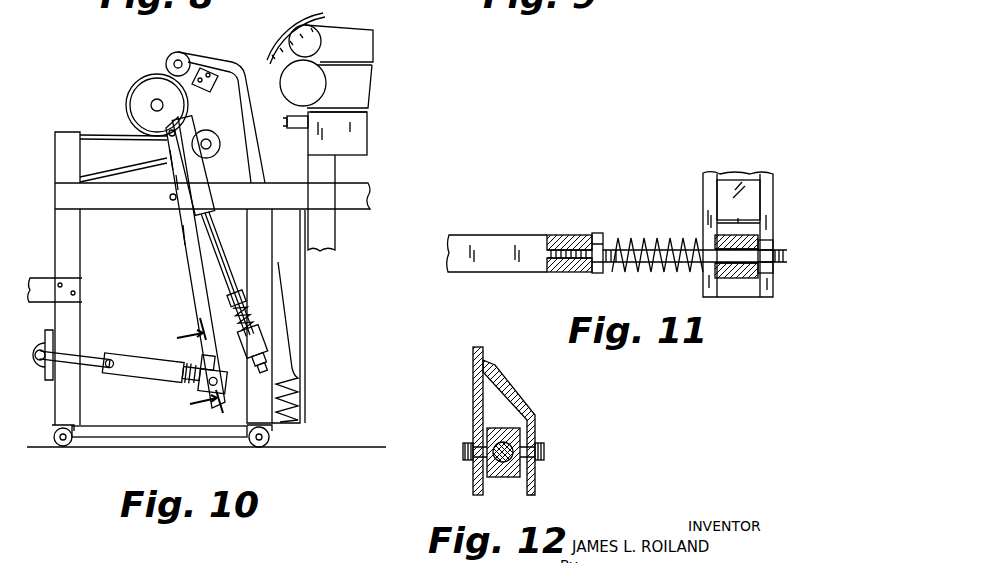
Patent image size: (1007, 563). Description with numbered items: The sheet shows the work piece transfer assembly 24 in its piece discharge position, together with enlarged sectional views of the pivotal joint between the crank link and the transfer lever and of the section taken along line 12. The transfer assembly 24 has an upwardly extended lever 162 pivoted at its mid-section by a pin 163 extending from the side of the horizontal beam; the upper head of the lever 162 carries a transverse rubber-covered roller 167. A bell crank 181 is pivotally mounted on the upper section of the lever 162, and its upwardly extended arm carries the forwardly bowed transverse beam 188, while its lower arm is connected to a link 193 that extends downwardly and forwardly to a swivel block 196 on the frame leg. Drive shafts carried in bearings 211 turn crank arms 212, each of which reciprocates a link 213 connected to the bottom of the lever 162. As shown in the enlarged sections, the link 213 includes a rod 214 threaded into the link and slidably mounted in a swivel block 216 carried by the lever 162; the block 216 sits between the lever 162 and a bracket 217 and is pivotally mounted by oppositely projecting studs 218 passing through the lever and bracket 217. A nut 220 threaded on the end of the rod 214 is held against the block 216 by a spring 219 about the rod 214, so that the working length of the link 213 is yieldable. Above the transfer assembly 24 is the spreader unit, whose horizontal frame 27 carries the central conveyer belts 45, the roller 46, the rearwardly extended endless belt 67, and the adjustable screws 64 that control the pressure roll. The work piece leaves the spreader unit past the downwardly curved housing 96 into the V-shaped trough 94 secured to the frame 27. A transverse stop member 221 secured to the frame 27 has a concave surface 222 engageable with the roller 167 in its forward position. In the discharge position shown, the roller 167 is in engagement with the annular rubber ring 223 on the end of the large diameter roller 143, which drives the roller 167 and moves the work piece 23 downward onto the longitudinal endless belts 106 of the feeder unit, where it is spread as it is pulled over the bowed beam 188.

In FIG. 10, the section line 12- 12 is at (194, 376).
In FIG. 10, the work piece 23 is at (260, 153).
In FIG. 10, the work piece transfer assembly 24 is at (234, 39).
In FIG. 10, the horizontal frame 27 is at (365, 145).
In FIG. 10, the central conveyer belts 45 is at (360, 67).
In FIG. 10, the roller 46 is at (315, 85).
In FIG. 10, the adjustable screws 64 is at (313, 43).
In FIG. 10, the endless belt 67 is at (365, 28).
In FIG. 10, the V-shaped trough 94 is at (305, 290).
In FIG. 10, the downwardly curved housing 96 is at (300, 15).
In FIG. 10, the endless belts 106 is at (105, 134).
In FIG. 10, the large diameter roller 143 is at (147, 77).
In FIG. 10, the lever 162 is at (173, 238).
In FIG. 11, the lever 162 is at (773, 183).
In FIG. 12, the lever 162 is at (472, 372).
In FIG. 10, the pin 163 is at (170, 199).
In FIG. 10, the roller 167 is at (177, 52).
In FIG. 10, the bell crank 181 is at (227, 76).
In FIG. 10, the transverse beam 188 is at (196, 93).
In FIG. 10, the link 193 is at (200, 176).
In FIG. 10, the swivel block 196 is at (280, 333).
In FIG. 10, the bearings 211 is at (36, 368).
In FIG. 10, the crank arm 212 is at (84, 350).
In FIG. 10, the link 213 is at (131, 350).
In FIG. 11, the link 213 is at (482, 235).
In FIG. 11, the rod 214 is at (660, 240).
In FIG. 12, the rod 214 is at (501, 462).
In FIG. 11, the swivel block 216 is at (733, 280).
In FIG. 12, the swivel block 216 is at (500, 427).
In FIG. 12, the bracket 217 is at (515, 396).
In FIG. 12, the studs 218 is at (545, 443).
In FIG. 11, the spring 219 is at (612, 237).
In FIG. 11, the nut 220 is at (765, 237).
In FIG. 10, the transverse stop member 221 is at (293, 130).
In FIG. 10, the concave surface 222 is at (282, 118).
In FIG. 10, the annular rubber ring 223 is at (127, 90).